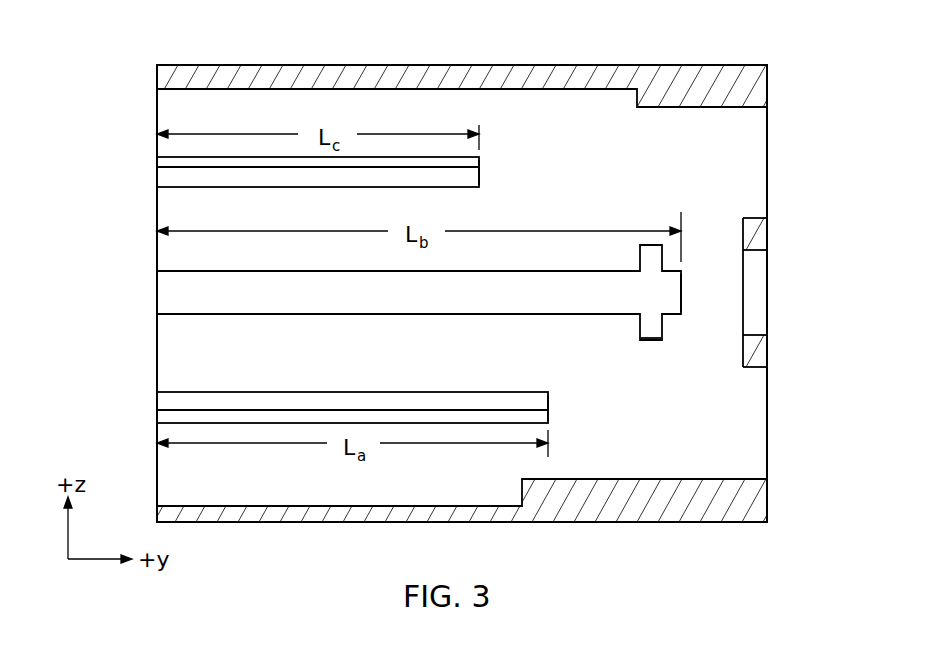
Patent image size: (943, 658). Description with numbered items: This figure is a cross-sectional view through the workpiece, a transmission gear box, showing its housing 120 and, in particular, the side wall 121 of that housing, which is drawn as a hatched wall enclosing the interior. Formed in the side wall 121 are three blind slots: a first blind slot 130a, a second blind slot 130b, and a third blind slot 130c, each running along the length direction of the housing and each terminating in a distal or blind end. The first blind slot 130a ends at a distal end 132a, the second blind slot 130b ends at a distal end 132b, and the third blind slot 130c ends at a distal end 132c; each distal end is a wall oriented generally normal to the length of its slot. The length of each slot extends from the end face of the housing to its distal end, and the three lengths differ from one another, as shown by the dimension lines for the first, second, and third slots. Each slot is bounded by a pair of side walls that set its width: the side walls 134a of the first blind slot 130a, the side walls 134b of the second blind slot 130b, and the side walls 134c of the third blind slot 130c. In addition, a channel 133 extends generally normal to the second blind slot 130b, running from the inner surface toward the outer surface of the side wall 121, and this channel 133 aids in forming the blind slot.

The housing 120 is at (746, 46).
The side wall 121 is at (765, 88).
The first blind slot 130a is at (153, 414).
The second blind slot 130b is at (165, 290).
The third blind slot 130c is at (160, 177).
The distal end of first blind slot 132a is at (548, 403).
The distal end of second blind slot 132b is at (681, 290).
The distal end of third blind slot 132c is at (479, 178).
The channel 133 is at (652, 335).
The side walls of first blind slot 134a is at (338, 423).
The side walls of second blind slot 134b is at (540, 271).
The side walls of third blind slot 134c is at (340, 157).